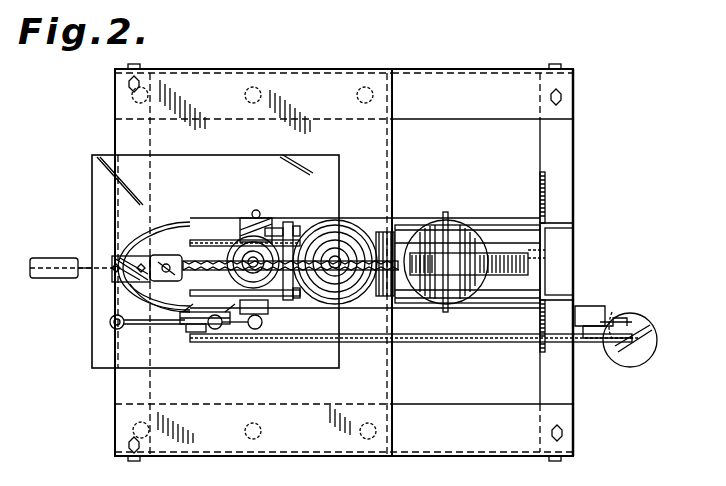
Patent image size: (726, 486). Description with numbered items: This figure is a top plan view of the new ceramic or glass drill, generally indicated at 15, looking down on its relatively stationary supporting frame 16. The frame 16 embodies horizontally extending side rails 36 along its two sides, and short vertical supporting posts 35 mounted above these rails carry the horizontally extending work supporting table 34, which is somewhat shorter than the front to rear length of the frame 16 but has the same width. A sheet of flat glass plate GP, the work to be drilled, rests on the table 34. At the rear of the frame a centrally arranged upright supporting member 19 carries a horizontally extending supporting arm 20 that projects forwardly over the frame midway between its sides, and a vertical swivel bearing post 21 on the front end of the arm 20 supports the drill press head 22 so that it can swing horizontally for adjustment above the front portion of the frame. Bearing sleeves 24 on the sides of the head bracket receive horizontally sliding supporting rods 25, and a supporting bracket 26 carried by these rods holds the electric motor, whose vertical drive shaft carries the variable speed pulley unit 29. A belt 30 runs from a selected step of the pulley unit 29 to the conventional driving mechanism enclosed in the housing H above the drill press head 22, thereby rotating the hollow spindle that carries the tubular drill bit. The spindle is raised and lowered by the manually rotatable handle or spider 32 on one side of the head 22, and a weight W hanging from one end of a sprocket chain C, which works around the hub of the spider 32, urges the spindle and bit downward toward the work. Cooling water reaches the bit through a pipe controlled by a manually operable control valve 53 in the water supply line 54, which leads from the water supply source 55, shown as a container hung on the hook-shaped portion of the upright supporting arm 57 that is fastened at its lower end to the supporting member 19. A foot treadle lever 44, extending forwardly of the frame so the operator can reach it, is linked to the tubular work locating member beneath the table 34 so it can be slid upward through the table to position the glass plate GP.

The ceramic drill 15 is at (578, 180).
The supporting frame 16 is at (482, 95).
The supporting member 19 is at (545, 263).
The supporting arm 20 is at (380, 223).
The swivel bearing post 21 is at (240, 230).
The drill press head 22 is at (163, 345).
The bearing sleeves 24 is at (250, 230).
The supporting rod 25 is at (222, 236).
The supporting bracket 26 is at (293, 220).
The variable speed pulley unit 29 is at (342, 228).
The belt 30 is at (182, 234).
The handle or spider 32 is at (132, 329).
The work supporting table 34 is at (322, 456).
The supporting posts 35 is at (256, 88).
The side rails 36 is at (480, 105).
The foot treadle lever 44 is at (80, 262).
The control valve 53 is at (150, 288).
The water supply line 54 is at (340, 295).
The water supply source 55 is at (455, 234).
The upright supporting arm 57 is at (478, 295).
The housing H is at (138, 232).
The glass plate GP is at (104, 362).
The sprocket chain C is at (465, 342).
The weight W is at (636, 355).